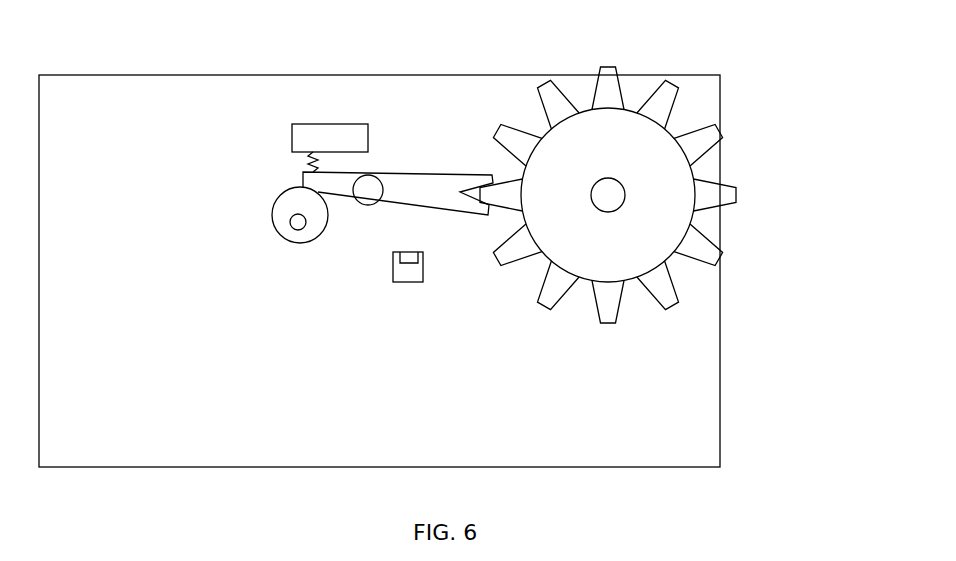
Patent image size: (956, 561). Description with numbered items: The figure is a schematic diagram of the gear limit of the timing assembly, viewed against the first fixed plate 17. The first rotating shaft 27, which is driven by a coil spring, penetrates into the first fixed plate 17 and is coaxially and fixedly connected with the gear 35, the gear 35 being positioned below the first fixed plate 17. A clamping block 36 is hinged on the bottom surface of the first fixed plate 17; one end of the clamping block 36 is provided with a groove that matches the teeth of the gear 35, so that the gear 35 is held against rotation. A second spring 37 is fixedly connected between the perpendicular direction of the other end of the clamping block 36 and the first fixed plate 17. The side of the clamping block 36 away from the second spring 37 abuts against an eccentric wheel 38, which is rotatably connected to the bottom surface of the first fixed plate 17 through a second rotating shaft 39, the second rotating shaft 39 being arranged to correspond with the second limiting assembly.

The first fixed plate 17 is at (680, 387).
The first rotating shaft 27 is at (610, 195).
The gear 35 is at (660, 220).
The clamping block 36 is at (438, 185).
The second spring 37 is at (292, 200).
The eccentric wheel 38 is at (290, 202).
The second rotating shaft 39 is at (297, 222).